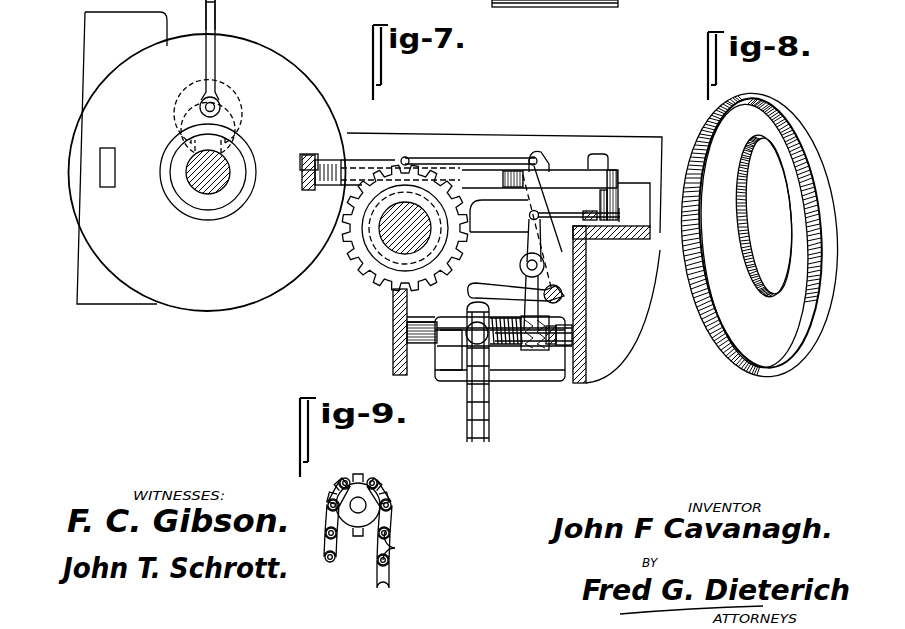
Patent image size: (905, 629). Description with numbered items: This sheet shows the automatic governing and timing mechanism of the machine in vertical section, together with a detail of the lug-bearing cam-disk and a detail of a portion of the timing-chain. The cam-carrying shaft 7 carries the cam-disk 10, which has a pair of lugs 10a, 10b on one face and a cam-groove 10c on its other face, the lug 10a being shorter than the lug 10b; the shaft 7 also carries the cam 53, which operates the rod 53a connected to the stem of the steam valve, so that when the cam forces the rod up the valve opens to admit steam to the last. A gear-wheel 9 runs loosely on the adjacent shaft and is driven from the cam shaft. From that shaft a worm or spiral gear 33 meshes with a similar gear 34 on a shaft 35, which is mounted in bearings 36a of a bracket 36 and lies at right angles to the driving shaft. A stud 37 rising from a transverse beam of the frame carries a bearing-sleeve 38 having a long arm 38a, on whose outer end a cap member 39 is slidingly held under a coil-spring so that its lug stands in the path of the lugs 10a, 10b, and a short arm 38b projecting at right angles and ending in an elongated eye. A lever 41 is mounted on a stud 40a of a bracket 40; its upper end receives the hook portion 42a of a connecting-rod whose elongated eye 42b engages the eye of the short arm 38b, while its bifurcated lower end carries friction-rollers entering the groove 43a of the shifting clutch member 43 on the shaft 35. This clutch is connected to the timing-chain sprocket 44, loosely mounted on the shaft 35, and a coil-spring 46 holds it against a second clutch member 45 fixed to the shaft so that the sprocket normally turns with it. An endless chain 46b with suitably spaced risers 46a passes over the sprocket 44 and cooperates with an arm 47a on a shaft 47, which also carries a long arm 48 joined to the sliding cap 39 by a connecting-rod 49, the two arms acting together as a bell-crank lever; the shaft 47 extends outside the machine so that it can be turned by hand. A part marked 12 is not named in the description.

In FIG. 7, the cam-carrying shaft 7 is at (205, 186).
In FIG. 7, the gear-wheel 9 is at (343, 259).
In FIG. 7, the cam-disk 10 is at (270, 60).
In FIG. 8, the cam-disk 10 is at (760, 360).
In FIG. 7, the lug 10a is at (112, 162).
In FIG. 7, the lug 10b is at (300, 147).
In FIG. 8, the cam-groove 10c is at (775, 284).
In FIG. 7, the frame 12 is at (613, 280).
In FIG. 7, the worm or spiral gear 33 is at (373, 268).
In FIG. 7, the worm or spiral gear 34 is at (395, 343).
In FIG. 7, the shaft 35 is at (575, 338).
In FIG. 9, the shaft 35 is at (352, 505).
In FIG. 7, the bracket 36 is at (455, 384).
In FIG. 7, the bearings 36a is at (436, 326).
In FIG. 7, the stud 37 is at (600, 156).
In FIG. 7, the bearing-sleeve 38 is at (612, 200).
In FIG. 7, the long arm 38a is at (558, 178).
In FIG. 7, the short arm 38b is at (653, 252).
In FIG. 7, the cap member 39 is at (356, 170).
In FIG. 7, the bracket 40 is at (611, 306).
In FIG. 7, the stud 40a is at (558, 263).
In FIG. 7, the lever 41 is at (528, 243).
In FIG. 7, the hook portion 42a is at (504, 216).
In FIG. 7, the elongated eye 42b is at (621, 215).
In FIG. 7, the shifting clutch member 43 is at (571, 212).
In FIG. 7, the groove 43a is at (533, 352).
In FIG. 7, the timing-chain sprocket 44 is at (463, 335).
In FIG. 9, the timing-chain sprocket 44 is at (368, 505).
In FIG. 7, the second clutch member 45 is at (574, 348).
In FIG. 7, the coil-spring 46 is at (505, 319).
In FIG. 9, the risers 46a is at (397, 545).
In FIG. 7, the endless chain 46b is at (486, 440).
In FIG. 9, the endless chain 46b is at (391, 574).
In FIG. 7, the shaft 47 is at (561, 298).
In FIG. 7, the arm 47a is at (494, 287).
In FIG. 7, the long arm 48 is at (531, 158).
In FIG. 7, the connecting-rod 49 is at (441, 160).
In FIG. 7, the cam 53 is at (238, 141).
In FIG. 7, the rod 53a is at (216, 21).